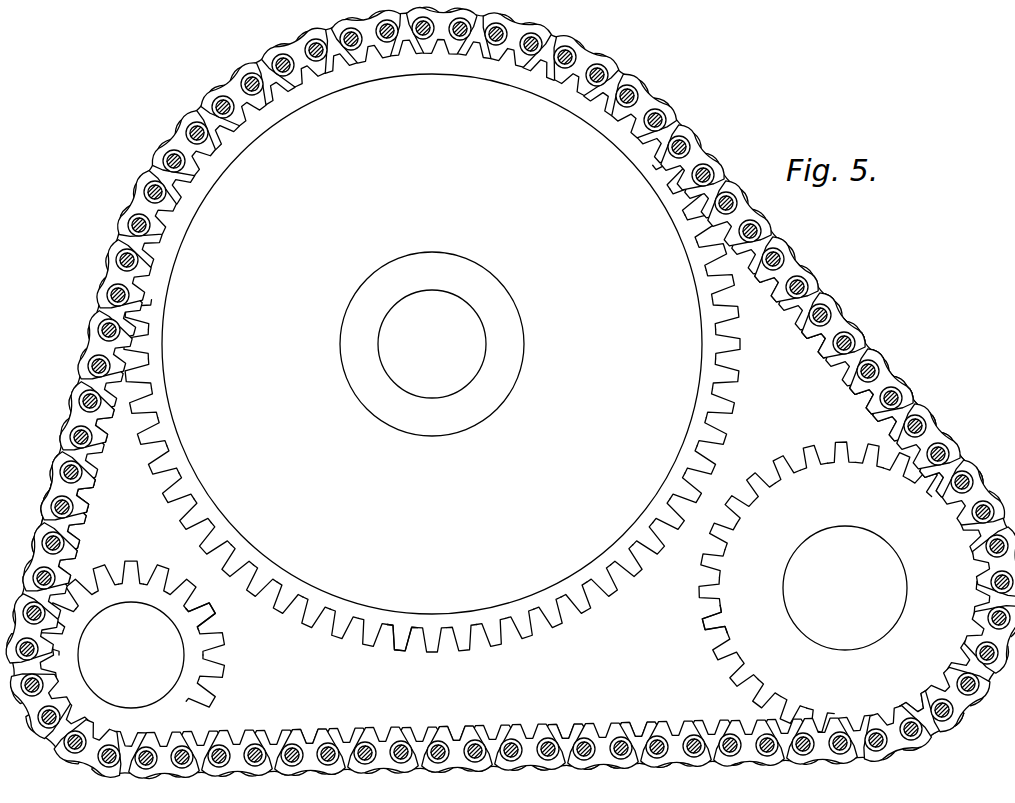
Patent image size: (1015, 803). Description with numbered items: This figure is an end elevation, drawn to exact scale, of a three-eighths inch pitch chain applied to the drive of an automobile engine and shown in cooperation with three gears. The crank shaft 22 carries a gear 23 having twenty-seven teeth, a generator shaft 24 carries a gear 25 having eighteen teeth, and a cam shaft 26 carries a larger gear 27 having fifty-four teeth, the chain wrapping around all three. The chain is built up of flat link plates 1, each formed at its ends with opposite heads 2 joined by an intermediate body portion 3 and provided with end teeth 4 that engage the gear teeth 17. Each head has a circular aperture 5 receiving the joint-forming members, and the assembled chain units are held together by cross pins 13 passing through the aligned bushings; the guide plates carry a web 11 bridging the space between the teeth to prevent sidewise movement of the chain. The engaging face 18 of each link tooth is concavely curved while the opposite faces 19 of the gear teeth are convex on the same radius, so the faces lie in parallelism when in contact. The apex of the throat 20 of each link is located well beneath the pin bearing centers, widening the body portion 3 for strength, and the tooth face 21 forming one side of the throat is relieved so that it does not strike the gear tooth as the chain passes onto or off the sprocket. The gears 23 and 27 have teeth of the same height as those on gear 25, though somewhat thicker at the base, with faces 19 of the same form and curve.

The link plate 1 is at (930, 445).
The head 2 is at (861, 345).
The body portion 3 is at (47, 488).
The end teeth 4 is at (87, 473).
The circular aperture 5 is at (962, 470).
The web 11 is at (772, 290).
The cross pin 13 is at (900, 388).
The gear teeth 17 is at (165, 560).
The engaging face 18 is at (848, 372).
The convex face 19 is at (393, 640).
The throat 20 is at (816, 338).
The tooth face 21 is at (860, 402).
The crank shaft 22 is at (822, 632).
The gear 23 is at (693, 638).
The generator shaft 24 is at (175, 655).
The gear 25 is at (195, 700).
The cam shaft 26 is at (450, 377).
The gear 27 is at (612, 593).